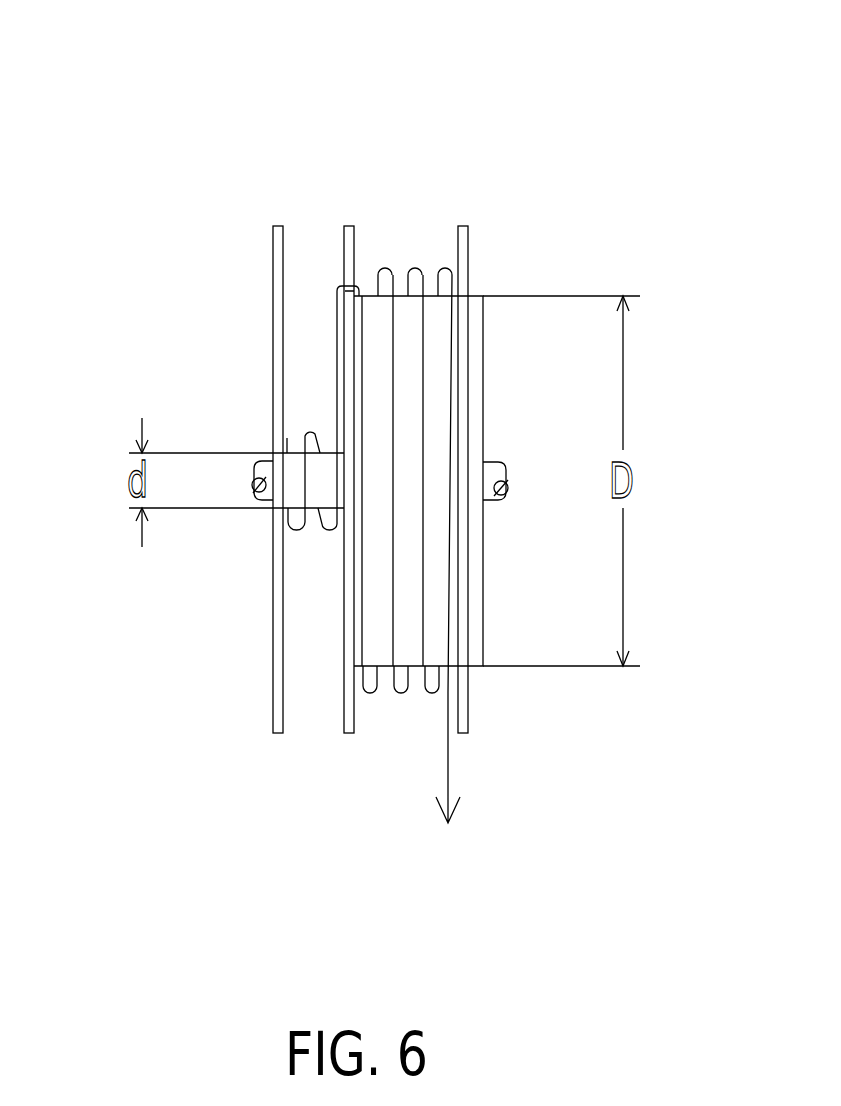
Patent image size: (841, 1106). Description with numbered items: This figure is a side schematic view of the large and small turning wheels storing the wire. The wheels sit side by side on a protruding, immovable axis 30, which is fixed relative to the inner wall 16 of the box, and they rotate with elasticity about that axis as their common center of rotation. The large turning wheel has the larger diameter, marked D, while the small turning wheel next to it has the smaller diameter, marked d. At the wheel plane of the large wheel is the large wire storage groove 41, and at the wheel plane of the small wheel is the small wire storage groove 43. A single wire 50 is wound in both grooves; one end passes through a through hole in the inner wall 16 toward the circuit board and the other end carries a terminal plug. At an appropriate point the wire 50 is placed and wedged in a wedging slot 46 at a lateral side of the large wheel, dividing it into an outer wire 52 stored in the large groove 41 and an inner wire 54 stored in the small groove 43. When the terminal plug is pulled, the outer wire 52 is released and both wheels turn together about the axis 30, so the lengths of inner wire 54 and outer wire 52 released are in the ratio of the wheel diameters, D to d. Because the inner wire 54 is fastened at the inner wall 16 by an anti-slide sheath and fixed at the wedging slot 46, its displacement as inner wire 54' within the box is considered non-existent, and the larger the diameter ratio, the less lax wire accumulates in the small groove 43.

The inner wall 16 is at (275, 545).
The immovable axis 30 is at (258, 487).
The large wire storage groove 41 is at (395, 253).
The small wire storage groove 43 is at (310, 543).
The wedging slot 46 is at (349, 285).
The wire 50 is at (417, 266).
The outer wire 52 is at (433, 692).
The inner wire 54 is at (241, 358).
The inner wire 54' is at (189, 343).